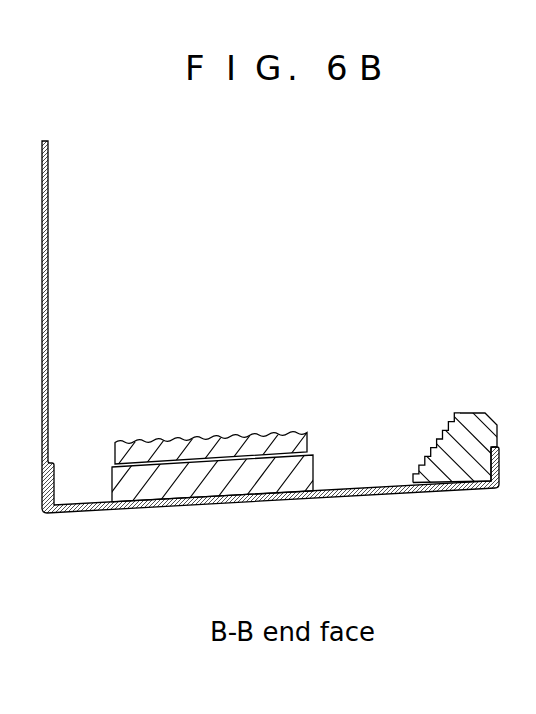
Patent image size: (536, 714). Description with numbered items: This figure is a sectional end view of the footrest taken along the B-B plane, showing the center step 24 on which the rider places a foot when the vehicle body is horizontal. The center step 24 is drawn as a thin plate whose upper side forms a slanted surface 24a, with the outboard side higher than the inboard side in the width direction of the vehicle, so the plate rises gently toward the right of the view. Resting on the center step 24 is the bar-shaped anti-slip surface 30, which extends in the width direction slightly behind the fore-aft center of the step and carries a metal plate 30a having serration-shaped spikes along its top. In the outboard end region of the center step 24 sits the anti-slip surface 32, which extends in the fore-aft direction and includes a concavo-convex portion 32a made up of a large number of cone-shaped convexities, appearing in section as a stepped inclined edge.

The center step 24 is at (333, 481).
The slanted surface 24a is at (350, 489).
The anti-slip surface 30 is at (185, 441).
The metal plate 30a is at (236, 440).
The anti-slip surface 32 is at (474, 412).
The concavo-convex portion 32a is at (442, 437).